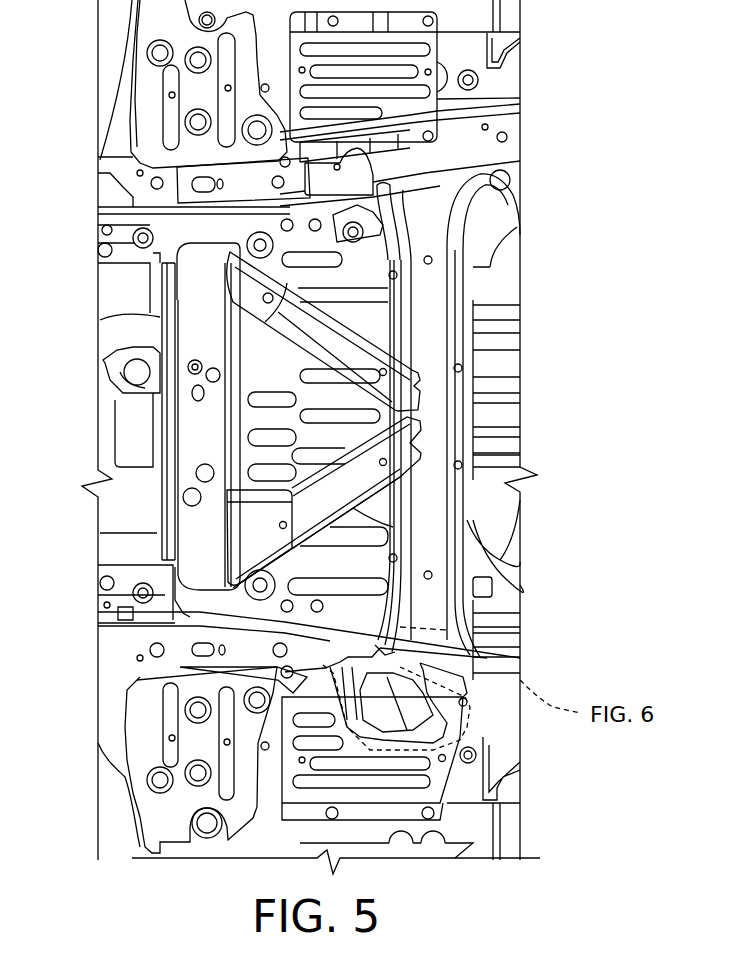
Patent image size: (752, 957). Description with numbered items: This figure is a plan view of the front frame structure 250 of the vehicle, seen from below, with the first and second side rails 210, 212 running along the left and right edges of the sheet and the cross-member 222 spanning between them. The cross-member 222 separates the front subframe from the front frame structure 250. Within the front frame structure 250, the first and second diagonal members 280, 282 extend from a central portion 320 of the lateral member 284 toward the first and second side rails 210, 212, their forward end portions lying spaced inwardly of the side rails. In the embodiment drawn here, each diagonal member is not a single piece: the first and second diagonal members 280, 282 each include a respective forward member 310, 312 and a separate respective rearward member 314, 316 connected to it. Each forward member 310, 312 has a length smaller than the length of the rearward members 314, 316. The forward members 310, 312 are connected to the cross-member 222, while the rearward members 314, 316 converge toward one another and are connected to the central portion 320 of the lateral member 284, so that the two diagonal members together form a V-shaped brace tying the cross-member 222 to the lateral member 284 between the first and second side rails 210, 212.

The first side rail 210 is at (197, 633).
The second side rail 212 is at (512, 147).
The cross-member 222 is at (190, 420).
The front frame structure 250 is at (317, 401).
The first diagonal member 280 is at (357, 537).
The second diagonal member 282 is at (362, 325).
The lateral member 284 is at (432, 347).
The forward member 310 is at (240, 528).
The forward member 312 is at (223, 268).
The rearward member 314 is at (407, 450).
The rearward member 316 is at (410, 393).
The central portion 320 is at (437, 413).